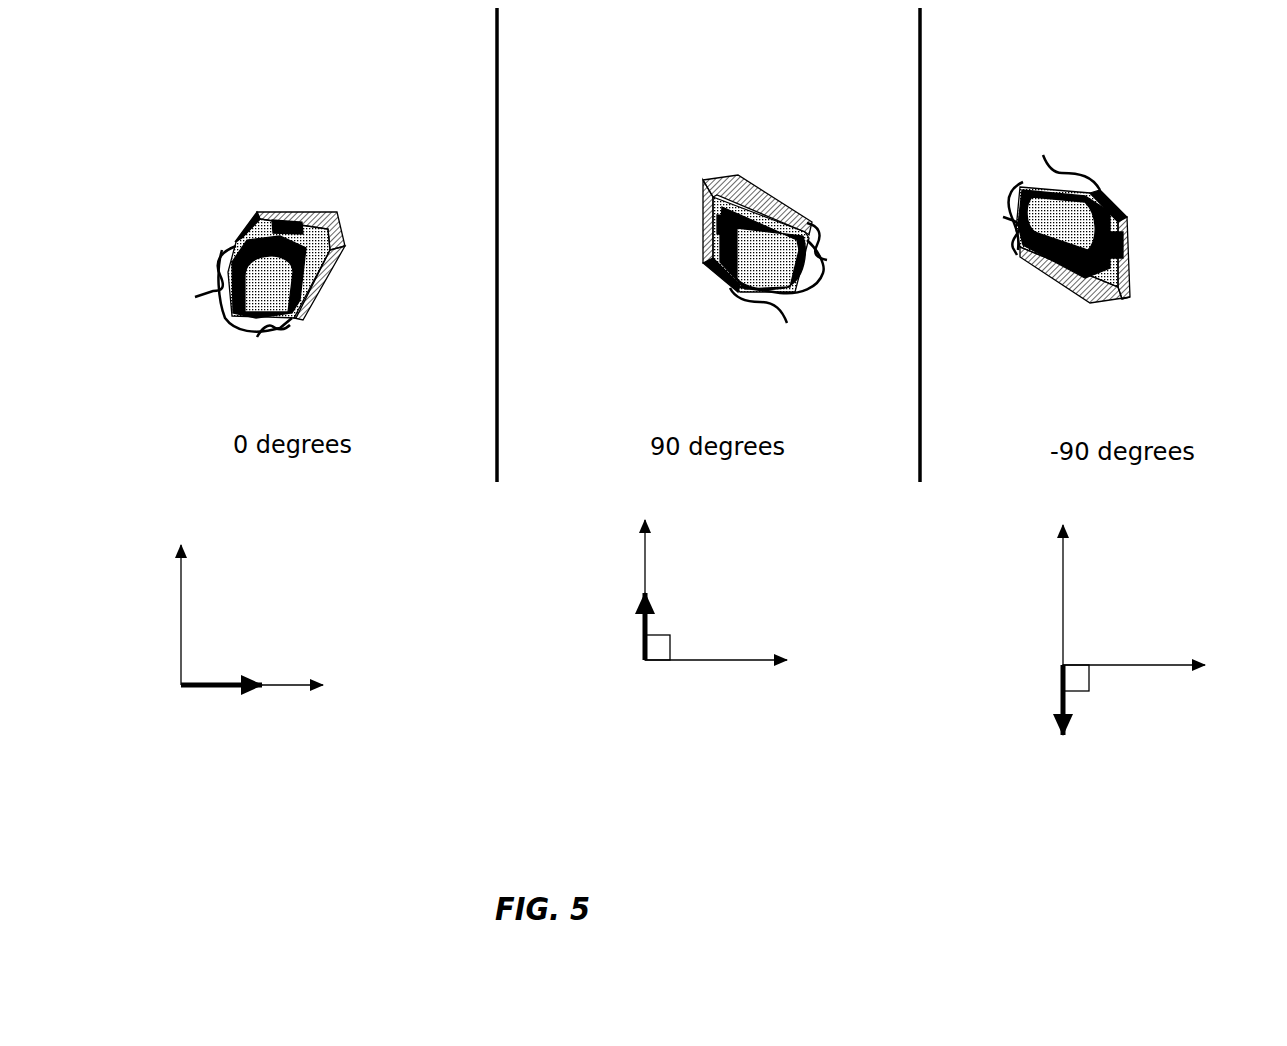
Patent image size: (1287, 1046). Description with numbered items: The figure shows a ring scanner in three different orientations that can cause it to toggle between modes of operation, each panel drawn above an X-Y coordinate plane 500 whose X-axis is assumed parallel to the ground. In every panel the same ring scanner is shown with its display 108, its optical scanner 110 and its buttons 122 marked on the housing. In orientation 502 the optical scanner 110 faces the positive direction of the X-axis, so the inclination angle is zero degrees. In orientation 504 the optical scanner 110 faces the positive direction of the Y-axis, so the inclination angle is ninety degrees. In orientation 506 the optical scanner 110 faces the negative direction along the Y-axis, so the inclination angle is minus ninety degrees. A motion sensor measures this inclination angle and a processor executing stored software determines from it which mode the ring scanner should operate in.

The X-Y coordinate plane 500 is at (300, 590).
The orientation 502 is at (173, 67).
The orientation 504 is at (617, 70).
The orientation 506 is at (1053, 70).
The display 108 is at (304, 193).
The optical scanner 110 is at (357, 205).
The buttons 122 is at (242, 212).